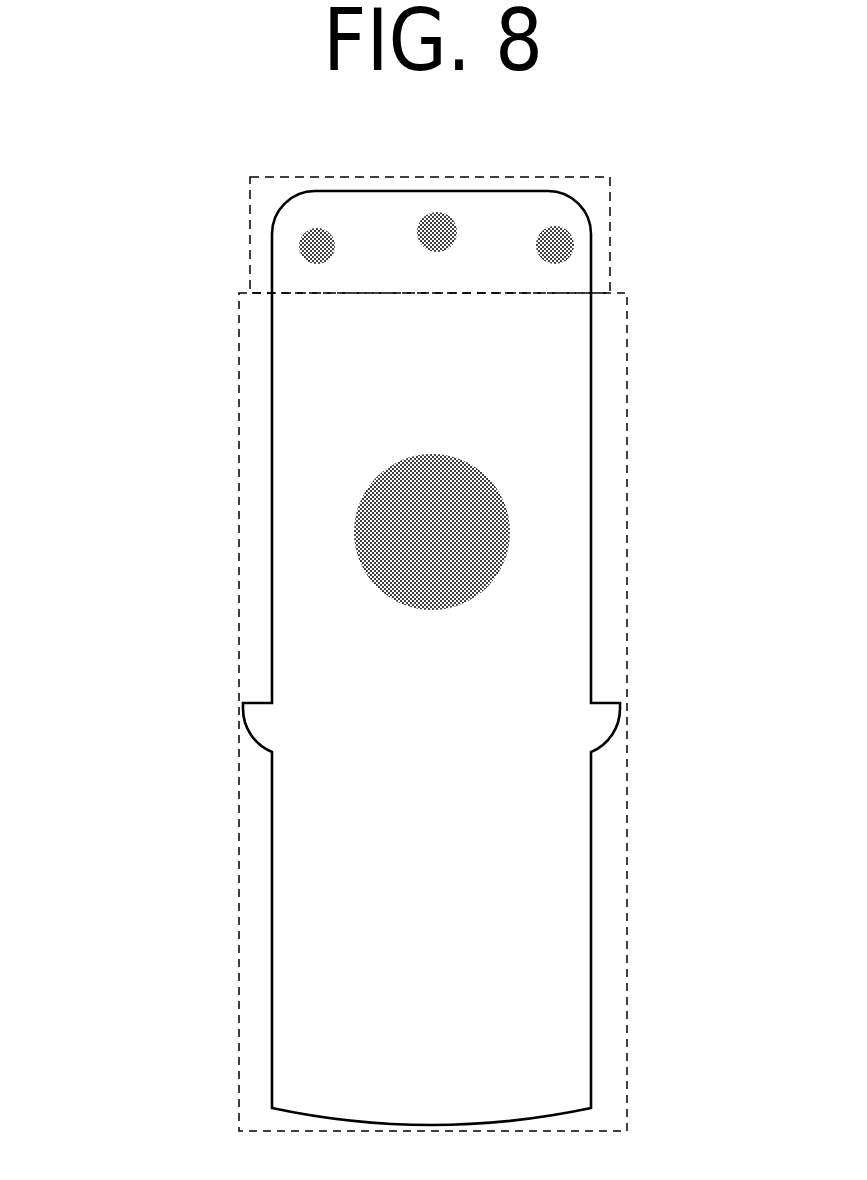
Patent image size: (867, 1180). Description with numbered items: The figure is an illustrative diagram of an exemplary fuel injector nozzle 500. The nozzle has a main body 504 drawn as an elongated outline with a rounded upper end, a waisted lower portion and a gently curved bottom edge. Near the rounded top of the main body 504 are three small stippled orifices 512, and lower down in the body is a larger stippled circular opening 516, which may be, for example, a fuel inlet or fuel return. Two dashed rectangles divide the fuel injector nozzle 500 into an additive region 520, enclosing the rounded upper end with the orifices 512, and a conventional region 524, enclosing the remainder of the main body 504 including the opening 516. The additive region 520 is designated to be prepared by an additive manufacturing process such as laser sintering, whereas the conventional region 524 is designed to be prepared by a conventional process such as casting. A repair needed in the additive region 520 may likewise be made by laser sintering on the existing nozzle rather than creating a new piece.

The fuel injector nozzle 500 is at (92, 153).
The main body 504 is at (452, 784).
The orifices 512 is at (335, 249).
The opening 516 is at (432, 452).
The additive region 520 is at (610, 200).
The conventional region 524 is at (627, 482).